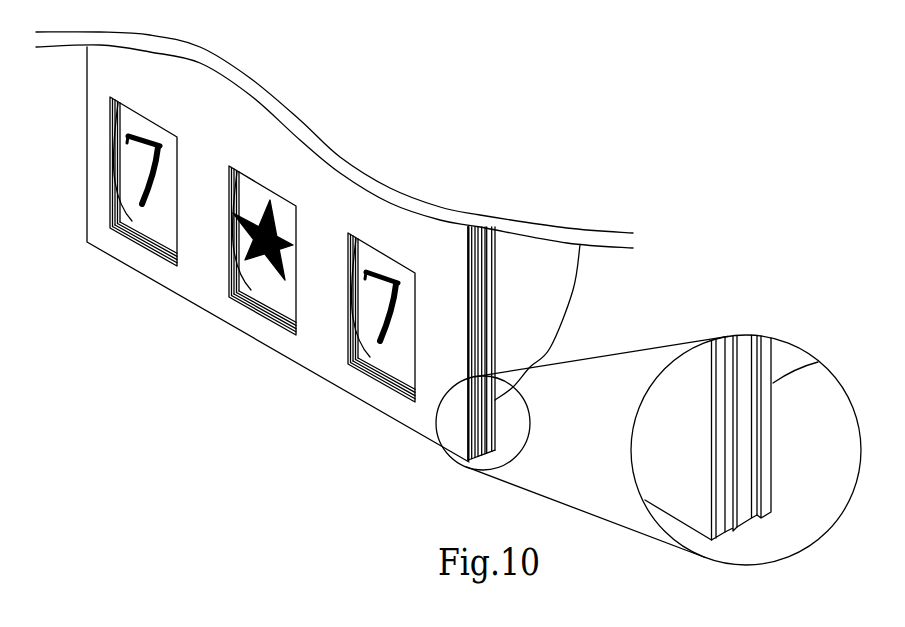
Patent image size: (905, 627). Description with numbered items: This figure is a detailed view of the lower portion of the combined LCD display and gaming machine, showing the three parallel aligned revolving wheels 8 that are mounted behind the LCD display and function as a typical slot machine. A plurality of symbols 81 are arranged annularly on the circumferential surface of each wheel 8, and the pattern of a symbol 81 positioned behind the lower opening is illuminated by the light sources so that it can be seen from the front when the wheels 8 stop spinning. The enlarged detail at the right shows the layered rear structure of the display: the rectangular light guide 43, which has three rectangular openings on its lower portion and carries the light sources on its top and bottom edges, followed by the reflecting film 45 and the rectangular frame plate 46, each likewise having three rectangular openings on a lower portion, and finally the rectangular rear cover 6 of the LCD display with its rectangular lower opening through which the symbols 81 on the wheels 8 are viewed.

The revolving wheel 8 is at (158, 212).
The symbol 81 is at (138, 190).
The light guide 43 is at (725, 337).
The reflecting film 45 is at (732, 337).
The frame plate 46 is at (745, 335).
The rear cover 6 is at (767, 338).